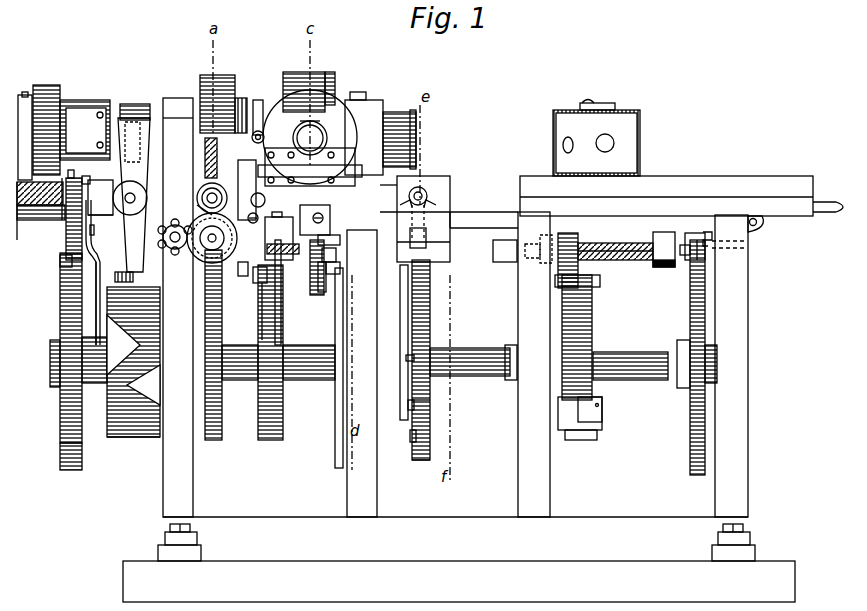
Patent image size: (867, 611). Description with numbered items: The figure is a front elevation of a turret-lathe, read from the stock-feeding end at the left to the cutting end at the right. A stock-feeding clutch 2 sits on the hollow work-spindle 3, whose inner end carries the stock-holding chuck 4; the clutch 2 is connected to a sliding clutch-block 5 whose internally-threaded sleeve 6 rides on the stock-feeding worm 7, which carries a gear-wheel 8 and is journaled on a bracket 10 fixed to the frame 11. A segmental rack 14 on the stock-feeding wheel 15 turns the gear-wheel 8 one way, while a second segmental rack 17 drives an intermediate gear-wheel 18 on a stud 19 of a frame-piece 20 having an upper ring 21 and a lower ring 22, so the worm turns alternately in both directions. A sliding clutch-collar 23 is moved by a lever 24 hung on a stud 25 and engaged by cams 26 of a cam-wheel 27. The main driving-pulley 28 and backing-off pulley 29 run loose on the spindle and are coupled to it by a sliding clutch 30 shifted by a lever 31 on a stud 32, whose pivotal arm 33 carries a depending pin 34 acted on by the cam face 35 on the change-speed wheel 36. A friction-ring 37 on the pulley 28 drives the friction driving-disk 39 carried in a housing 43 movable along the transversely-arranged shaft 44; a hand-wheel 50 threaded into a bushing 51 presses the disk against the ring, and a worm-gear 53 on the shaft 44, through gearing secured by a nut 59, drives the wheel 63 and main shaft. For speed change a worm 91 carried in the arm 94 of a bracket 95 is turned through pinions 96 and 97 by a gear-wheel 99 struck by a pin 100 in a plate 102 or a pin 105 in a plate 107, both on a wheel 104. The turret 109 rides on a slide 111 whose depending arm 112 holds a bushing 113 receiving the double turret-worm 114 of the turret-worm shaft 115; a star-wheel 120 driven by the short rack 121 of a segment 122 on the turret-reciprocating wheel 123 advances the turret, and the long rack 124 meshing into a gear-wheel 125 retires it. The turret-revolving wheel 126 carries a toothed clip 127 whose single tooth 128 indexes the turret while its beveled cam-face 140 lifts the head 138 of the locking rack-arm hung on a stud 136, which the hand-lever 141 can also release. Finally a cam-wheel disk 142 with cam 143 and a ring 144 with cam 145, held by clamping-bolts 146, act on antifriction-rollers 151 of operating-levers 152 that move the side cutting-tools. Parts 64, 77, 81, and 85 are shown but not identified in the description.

The stock-feeding clutch 2 is at (25, 95).
The hollow work-spindle 3 is at (48, 95).
The stock-holding chuck 4 is at (398, 112).
The sliding clutch-block 5 is at (30, 220).
The internally-threaded sleeve 6 is at (222, 320).
The stock-feeding worm 7 is at (16, 219).
The gear-wheel 8 is at (74, 212).
The bracket 10 is at (100, 197).
The frame 11 is at (178, 307).
The segmental rack 14 is at (66, 253).
The stock-feeding wheel 15 is at (62, 300).
The segmental rack 17 is at (82, 468).
The intermediate gear-wheel 18 is at (91, 245).
The stud 19 is at (94, 230).
The frame-piece 20 is at (94, 305).
The ring 21 is at (90, 180).
The ring 22 is at (96, 383).
The sliding clutch-collar 23 is at (136, 104).
The lever 24 is at (132, 200).
The stud 25 is at (130, 204).
The cams 26 is at (133, 362).
The cam-wheel 27 is at (138, 437).
The main driving-pulley 28 is at (290, 72).
The backing-off pulley 29 is at (228, 75).
The sliding clutch 30 is at (258, 102).
The lever 31 is at (247, 190).
The stud 32 is at (266, 195).
The pivotal arm 33 is at (279, 231).
The depending pin 34 is at (287, 292).
The cam face 35 is at (257, 283).
The change-speed wheel 36 is at (270, 326).
The friction-ring 37 is at (335, 84).
The friction driving-disk 39 is at (310, 138).
The housing 43 is at (312, 124).
The transversely-arranged shaft 44 is at (227, 115).
The hand-wheel 50 is at (320, 135).
The bushing 51 is at (197, 198).
The worm-gear 53 is at (205, 145).
The nut 59 is at (195, 209).
The wheel 63 is at (178, 250).
The gear 64 is at (212, 238).
The gear 77 is at (258, 408).
The block 81 is at (236, 278).
The rod 85 is at (258, 311).
The worm 91 is at (280, 215).
The arm 94 is at (323, 219).
The bracket 95 is at (325, 210).
The pinion 96 is at (335, 237).
The pinion 97 is at (319, 274).
The gear-wheel 99 is at (336, 255).
The pin 100 is at (300, 249).
The plate 102 is at (397, 243).
The wheel 104 is at (343, 300).
The pin 105 is at (323, 296).
The plate 107 is at (340, 270).
The turret 109 is at (640, 148).
The slide 111 is at (666, 196).
The depending arm 112 is at (664, 232).
The bushing 113 is at (662, 284).
The double turret-worm 114 is at (628, 260).
The turret-worm shaft 115 is at (548, 266).
The star-wheel 120 is at (596, 243).
The short rack 121 is at (600, 415).
The segment 122 is at (598, 406).
The turret-reciprocating wheel 123 is at (604, 318).
The long rack 124 is at (578, 440).
The gear-wheel 125 is at (566, 233).
The turret-revolving wheel 126 is at (690, 322).
The adjustable toothed clip 127 is at (697, 262).
The single tooth 128 is at (695, 233).
The stud 136 is at (766, 230).
The plate or head 138 is at (730, 248).
The beveled cam-face 140 is at (712, 238).
The hand-lever 141 is at (830, 210).
The cam-wheel disk 142 is at (430, 412).
The cam 143 is at (430, 292).
The ring 144 is at (414, 458).
The cam 145 is at (410, 436).
The clamping-bolts 146 is at (408, 405).
The antifriction-rollers 151 is at (414, 358).
The operating-levers 152 is at (440, 312).